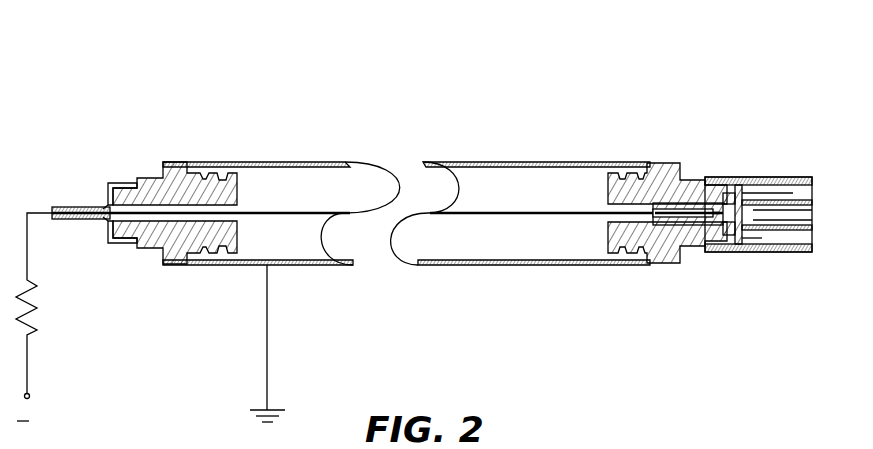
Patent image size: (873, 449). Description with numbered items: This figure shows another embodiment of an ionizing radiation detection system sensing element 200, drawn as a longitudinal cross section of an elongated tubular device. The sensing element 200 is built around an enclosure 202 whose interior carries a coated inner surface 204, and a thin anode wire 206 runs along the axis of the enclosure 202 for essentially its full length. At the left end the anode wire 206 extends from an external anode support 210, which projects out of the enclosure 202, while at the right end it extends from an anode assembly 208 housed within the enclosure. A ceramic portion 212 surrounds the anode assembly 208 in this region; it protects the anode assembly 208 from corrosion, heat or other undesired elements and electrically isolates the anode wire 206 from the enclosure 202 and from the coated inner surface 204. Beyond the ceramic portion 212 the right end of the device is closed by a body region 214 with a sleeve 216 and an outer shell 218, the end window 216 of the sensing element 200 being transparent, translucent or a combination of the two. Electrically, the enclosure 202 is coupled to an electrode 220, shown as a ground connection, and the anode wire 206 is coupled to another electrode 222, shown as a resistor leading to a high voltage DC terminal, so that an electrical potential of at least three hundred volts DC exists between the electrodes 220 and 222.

The sensing element 200 is at (124, 75).
The enclosure 202 is at (519, 153).
The coated inner surface 204 is at (506, 256).
The anode wire 206 is at (311, 204).
The anode assembly 208 is at (686, 191).
The external anode support 210 is at (92, 195).
The ceramic portion 212 is at (600, 170).
The connector body 214 is at (763, 164).
The end window 216 is at (805, 190).
The outer shell 218 is at (790, 253).
The electrode 220 is at (246, 391).
The electrode 222 is at (88, 370).